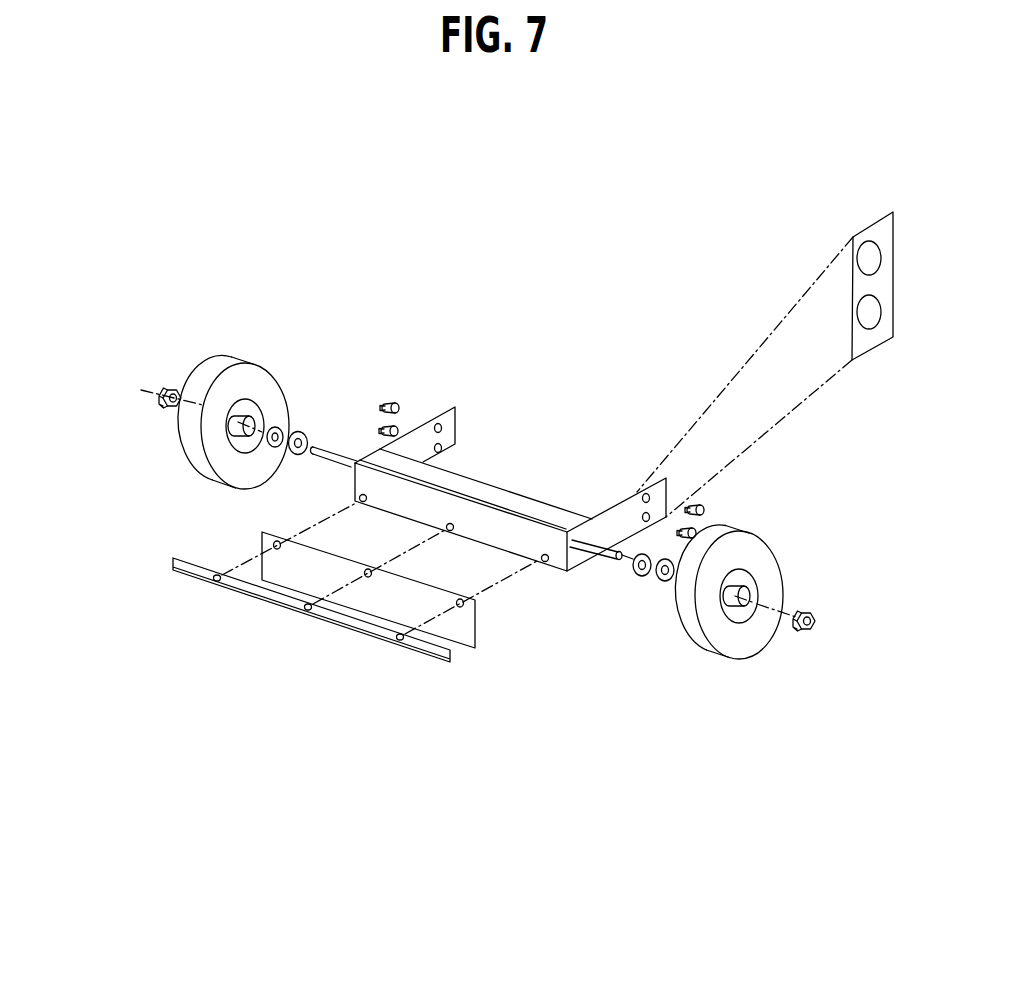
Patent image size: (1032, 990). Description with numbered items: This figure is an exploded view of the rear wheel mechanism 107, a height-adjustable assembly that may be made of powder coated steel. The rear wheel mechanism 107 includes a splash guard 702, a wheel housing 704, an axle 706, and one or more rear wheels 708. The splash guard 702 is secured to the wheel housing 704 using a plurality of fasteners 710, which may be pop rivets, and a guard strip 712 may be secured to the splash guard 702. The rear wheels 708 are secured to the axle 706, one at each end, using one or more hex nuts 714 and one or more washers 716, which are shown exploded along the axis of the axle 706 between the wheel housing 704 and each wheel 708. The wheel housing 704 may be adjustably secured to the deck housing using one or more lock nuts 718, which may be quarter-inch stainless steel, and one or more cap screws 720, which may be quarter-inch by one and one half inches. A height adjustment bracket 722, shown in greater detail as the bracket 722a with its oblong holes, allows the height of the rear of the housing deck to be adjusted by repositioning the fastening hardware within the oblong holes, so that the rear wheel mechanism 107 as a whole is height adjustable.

The rear wheel mechanism 107 is at (313, 252).
The splash guard 702 is at (477, 628).
The wheel housing 704 is at (555, 572).
The axle 706 is at (622, 560).
The rear wheel 708 is at (203, 367).
The fasteners 710 is at (277, 549).
The guard strip 712 is at (401, 643).
The hex nut 714 is at (158, 398).
The washer 716 is at (276, 428).
The lock nut 718 is at (441, 429).
The cap screw 720 is at (393, 402).
The height adjustment bracket 722 is at (528, 493).
The height adjustment bracket (detail) 722a is at (789, 207).